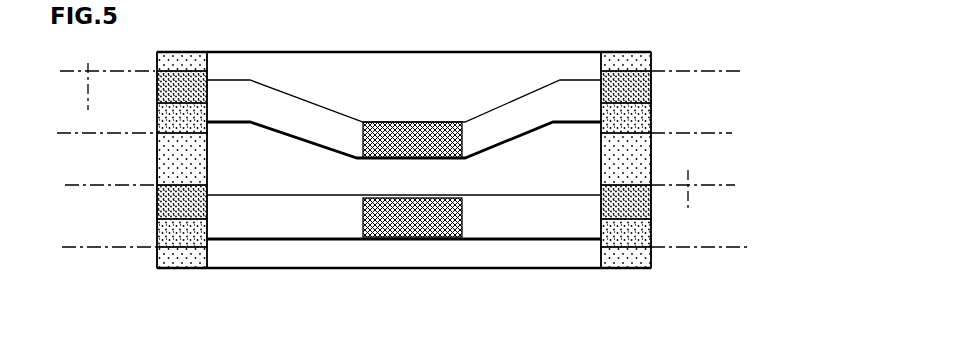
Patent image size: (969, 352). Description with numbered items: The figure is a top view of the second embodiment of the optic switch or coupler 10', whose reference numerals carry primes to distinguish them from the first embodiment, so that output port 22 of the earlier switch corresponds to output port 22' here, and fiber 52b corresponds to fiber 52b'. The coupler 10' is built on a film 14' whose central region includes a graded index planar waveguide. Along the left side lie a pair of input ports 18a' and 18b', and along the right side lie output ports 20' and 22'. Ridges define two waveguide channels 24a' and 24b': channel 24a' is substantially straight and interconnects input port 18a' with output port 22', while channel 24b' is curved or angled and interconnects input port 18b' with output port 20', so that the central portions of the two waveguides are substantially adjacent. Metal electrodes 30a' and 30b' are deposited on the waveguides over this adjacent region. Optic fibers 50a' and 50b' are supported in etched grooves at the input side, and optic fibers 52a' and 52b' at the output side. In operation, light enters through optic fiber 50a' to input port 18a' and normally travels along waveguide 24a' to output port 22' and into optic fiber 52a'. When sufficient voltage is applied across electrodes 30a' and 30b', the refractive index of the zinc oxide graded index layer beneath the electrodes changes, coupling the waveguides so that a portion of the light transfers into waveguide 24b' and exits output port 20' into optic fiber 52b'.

The optic switch 10' is at (754, 11).
The film 14' is at (404, 173).
The input port 18a' is at (175, 172).
The input port 18b' is at (167, 108).
The output port 20' is at (639, 105).
The output port 22' is at (652, 172).
The output port 22 is at (654, 9).
The waveguide channel 24a' is at (404, 244).
The waveguide channel 24b' is at (404, 110).
The metal electrode 30a' is at (395, 233).
The metal electrode 30b' is at (412, 122).
The optic fiber 50a' is at (107, 208).
The optic fiber 50b' is at (107, 77).
The optic fiber 52a' is at (699, 204).
The optic fiber 52b' is at (695, 83).
The right axis 52b is at (718, 4).